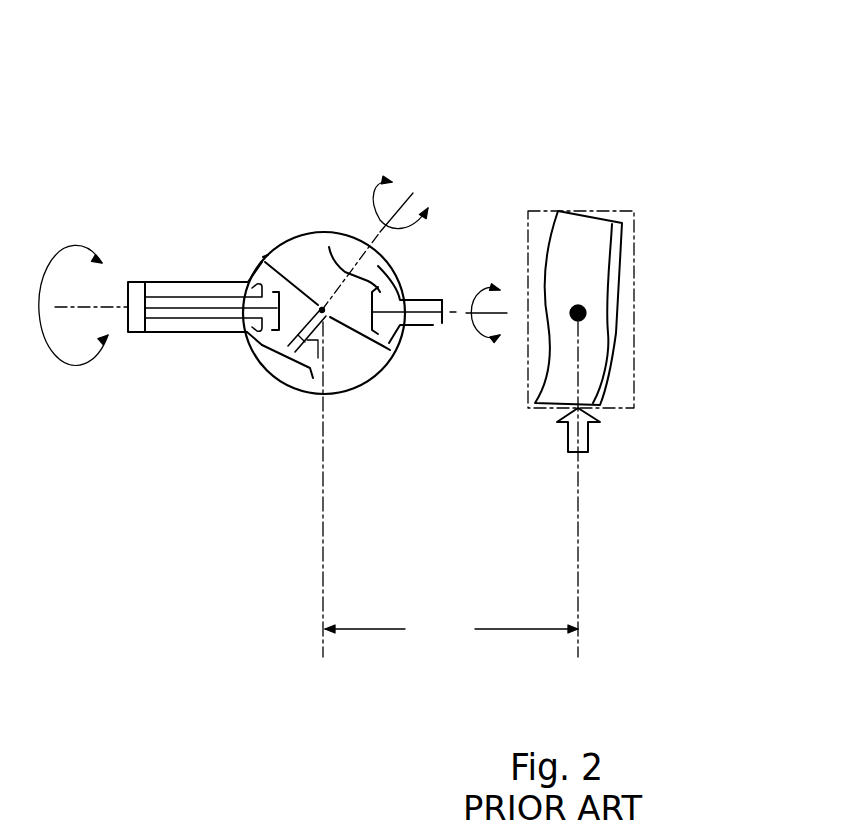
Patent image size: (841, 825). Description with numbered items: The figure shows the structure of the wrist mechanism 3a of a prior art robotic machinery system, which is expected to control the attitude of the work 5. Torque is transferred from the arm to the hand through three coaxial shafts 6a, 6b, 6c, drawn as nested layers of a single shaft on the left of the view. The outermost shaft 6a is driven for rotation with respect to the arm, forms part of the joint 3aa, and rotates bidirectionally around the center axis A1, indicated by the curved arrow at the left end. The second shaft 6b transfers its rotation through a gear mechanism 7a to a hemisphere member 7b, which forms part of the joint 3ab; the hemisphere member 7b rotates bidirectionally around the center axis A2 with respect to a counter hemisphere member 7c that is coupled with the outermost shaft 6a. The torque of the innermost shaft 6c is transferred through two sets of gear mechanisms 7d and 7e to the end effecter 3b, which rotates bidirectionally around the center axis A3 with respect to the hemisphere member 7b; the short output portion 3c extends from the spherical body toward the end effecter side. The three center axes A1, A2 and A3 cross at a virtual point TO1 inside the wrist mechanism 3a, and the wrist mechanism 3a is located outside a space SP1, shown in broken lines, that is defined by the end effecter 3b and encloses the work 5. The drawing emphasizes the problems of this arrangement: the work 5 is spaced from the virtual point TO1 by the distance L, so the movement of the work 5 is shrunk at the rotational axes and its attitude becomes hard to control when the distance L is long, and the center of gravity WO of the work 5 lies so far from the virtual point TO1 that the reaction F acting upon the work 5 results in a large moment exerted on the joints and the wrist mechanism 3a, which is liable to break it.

The wrist mechanism 3a is at (387, 53).
The joint 3aa is at (143, 282).
The joint 3ab is at (263, 258).
The end effecter 3b is at (442, 323).
The output arm 3c is at (442, 297).
The work 5 is at (585, 225).
The outermost shaft 6a is at (163, 333).
The second shaft 6b is at (193, 320).
The innermost shaft 6c is at (223, 312).
The gear mechanism 7a is at (265, 338).
The hemisphere member 7b is at (290, 232).
The counter hemisphere member 7c is at (367, 382).
The gear mechanism 7d is at (280, 338).
The gear mechanism 7e is at (383, 270).
The center axis A1 is at (60, 363).
The center axis A2 is at (411, 196).
The center axis A3 is at (507, 313).
The virtual point TO1 is at (322, 308).
The space SP1 is at (634, 282).
The center of gravity WO is at (582, 318).
The reaction F is at (585, 440).
The distance L is at (451, 631).